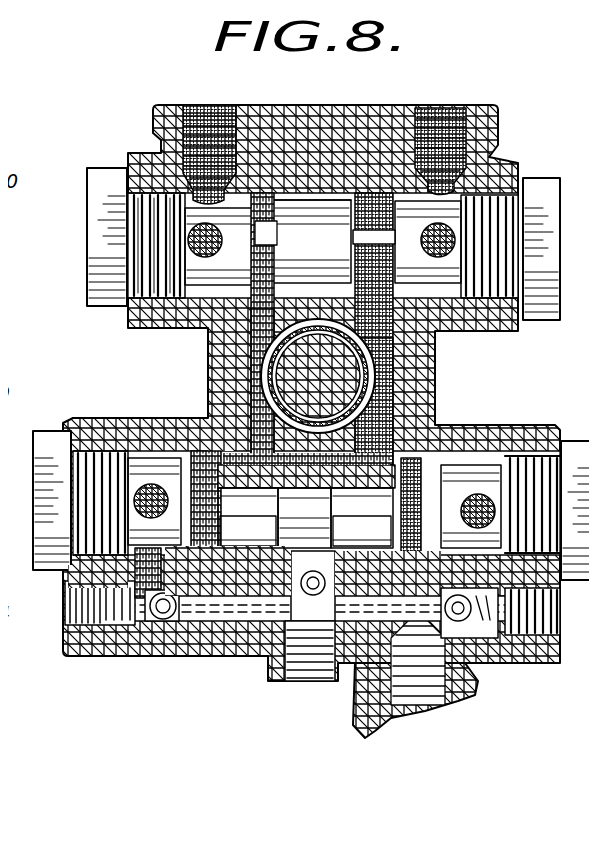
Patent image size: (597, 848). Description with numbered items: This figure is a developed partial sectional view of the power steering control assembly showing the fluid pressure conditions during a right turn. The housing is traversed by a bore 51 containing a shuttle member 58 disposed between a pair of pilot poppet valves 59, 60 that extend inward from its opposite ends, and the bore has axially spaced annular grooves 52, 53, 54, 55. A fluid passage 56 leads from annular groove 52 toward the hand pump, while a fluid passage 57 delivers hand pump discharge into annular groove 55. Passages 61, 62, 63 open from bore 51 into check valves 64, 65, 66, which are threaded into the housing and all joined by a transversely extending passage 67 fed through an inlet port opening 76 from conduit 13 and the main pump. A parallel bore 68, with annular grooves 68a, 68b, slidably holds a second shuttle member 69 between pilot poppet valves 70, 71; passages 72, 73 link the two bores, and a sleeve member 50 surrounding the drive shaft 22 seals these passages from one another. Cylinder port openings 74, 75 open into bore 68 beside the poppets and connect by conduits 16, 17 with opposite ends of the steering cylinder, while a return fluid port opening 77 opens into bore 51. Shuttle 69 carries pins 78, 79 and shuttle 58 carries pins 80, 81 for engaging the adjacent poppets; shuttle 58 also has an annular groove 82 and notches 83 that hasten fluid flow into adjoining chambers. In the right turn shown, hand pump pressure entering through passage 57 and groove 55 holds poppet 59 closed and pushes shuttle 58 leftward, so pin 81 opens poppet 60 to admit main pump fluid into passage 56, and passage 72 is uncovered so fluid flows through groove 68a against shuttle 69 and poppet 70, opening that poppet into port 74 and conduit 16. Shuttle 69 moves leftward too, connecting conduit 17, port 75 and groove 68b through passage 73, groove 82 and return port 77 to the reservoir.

The conduit 13 is at (423, 707).
The conduit 16 is at (435, 100).
The conduit 17 is at (200, 97).
The drive shaft 22 is at (343, 374).
The sleeve member 50 is at (372, 394).
The bore 51 is at (227, 434).
The annular groove 52 is at (187, 571).
The annular groove 53 is at (270, 540).
The annular groove 54 is at (360, 574).
The annular groove 55 is at (413, 550).
The fluid passage 56 is at (190, 445).
The fluid passage 57 is at (500, 504).
The shuttle member 58 is at (229, 571).
The pilot poppet valve 59 is at (573, 423).
The pilot poppet valve 60 is at (51, 414).
The passage 61 is at (490, 578).
The passage 62 is at (240, 586).
The passage 63 is at (98, 575).
The check valve 64 is at (560, 615).
The check valve 65 is at (300, 663).
The check valve 66 is at (57, 602).
The transversely extending passage 67 is at (247, 607).
The bore 68 is at (292, 193).
The annular groove 68a is at (370, 190).
The annular groove 68b is at (267, 193).
The shuttle member 69 is at (312, 241).
The pilot poppet valve 70 is at (559, 232).
The pilot poppet valve 71 is at (70, 230).
The passage 72 is at (422, 360).
The passage 73 is at (247, 320).
The cylinder port opening 74 is at (455, 100).
The cylinder port opening 75 is at (183, 97).
The inlet port opening 76 is at (407, 703).
The return fluid port opening 77 is at (304, 518).
The pin 78 is at (362, 227).
The pin 79 is at (248, 228).
The pin 80 is at (362, 531).
The pin 81 is at (248, 531).
The annular groove 82 is at (315, 458).
The notches 83 is at (305, 518).